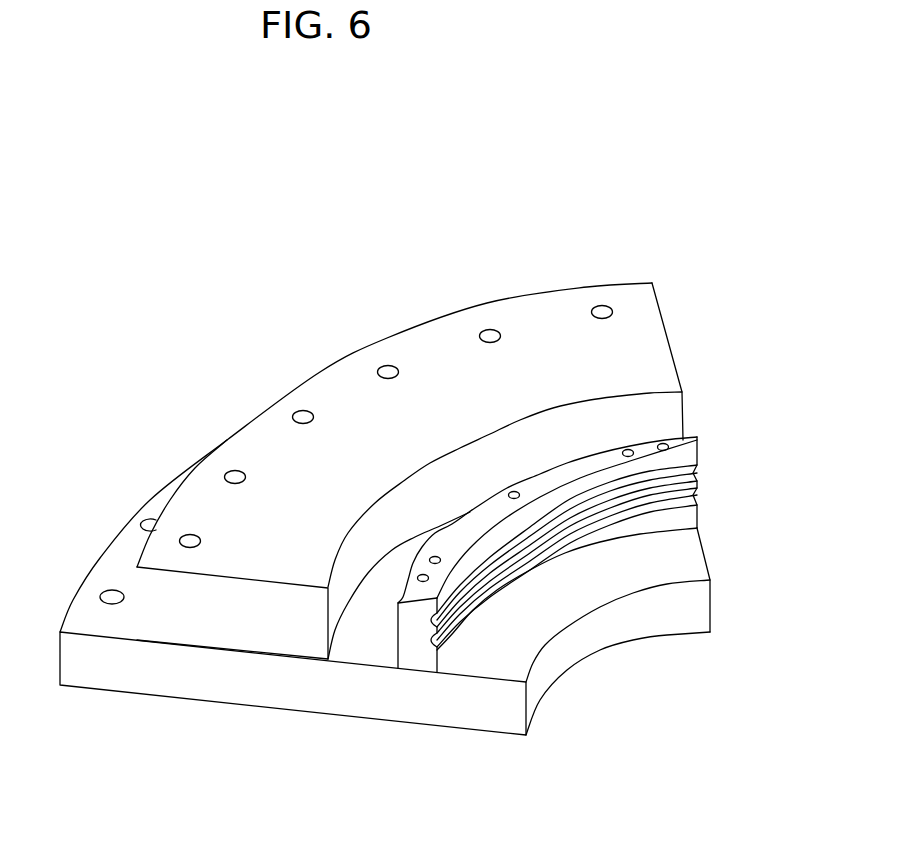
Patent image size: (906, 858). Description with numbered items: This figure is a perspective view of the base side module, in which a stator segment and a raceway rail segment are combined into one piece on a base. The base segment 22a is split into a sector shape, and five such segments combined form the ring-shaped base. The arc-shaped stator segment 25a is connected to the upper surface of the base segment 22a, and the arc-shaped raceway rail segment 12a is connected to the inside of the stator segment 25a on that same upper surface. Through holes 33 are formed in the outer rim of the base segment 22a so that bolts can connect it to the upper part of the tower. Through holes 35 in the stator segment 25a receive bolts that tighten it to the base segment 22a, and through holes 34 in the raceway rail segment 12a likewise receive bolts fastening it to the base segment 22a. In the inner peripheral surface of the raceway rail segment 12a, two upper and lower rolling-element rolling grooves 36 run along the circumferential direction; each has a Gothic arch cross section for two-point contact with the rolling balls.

The raceway rail segment 12a is at (687, 450).
The base segment 22a is at (683, 562).
The stator segment 25a is at (647, 350).
The through holes 33 is at (102, 593).
The through holes 34 is at (630, 450).
The through holes 35 is at (302, 413).
The rolling-element rolling grooves 36 is at (689, 497).